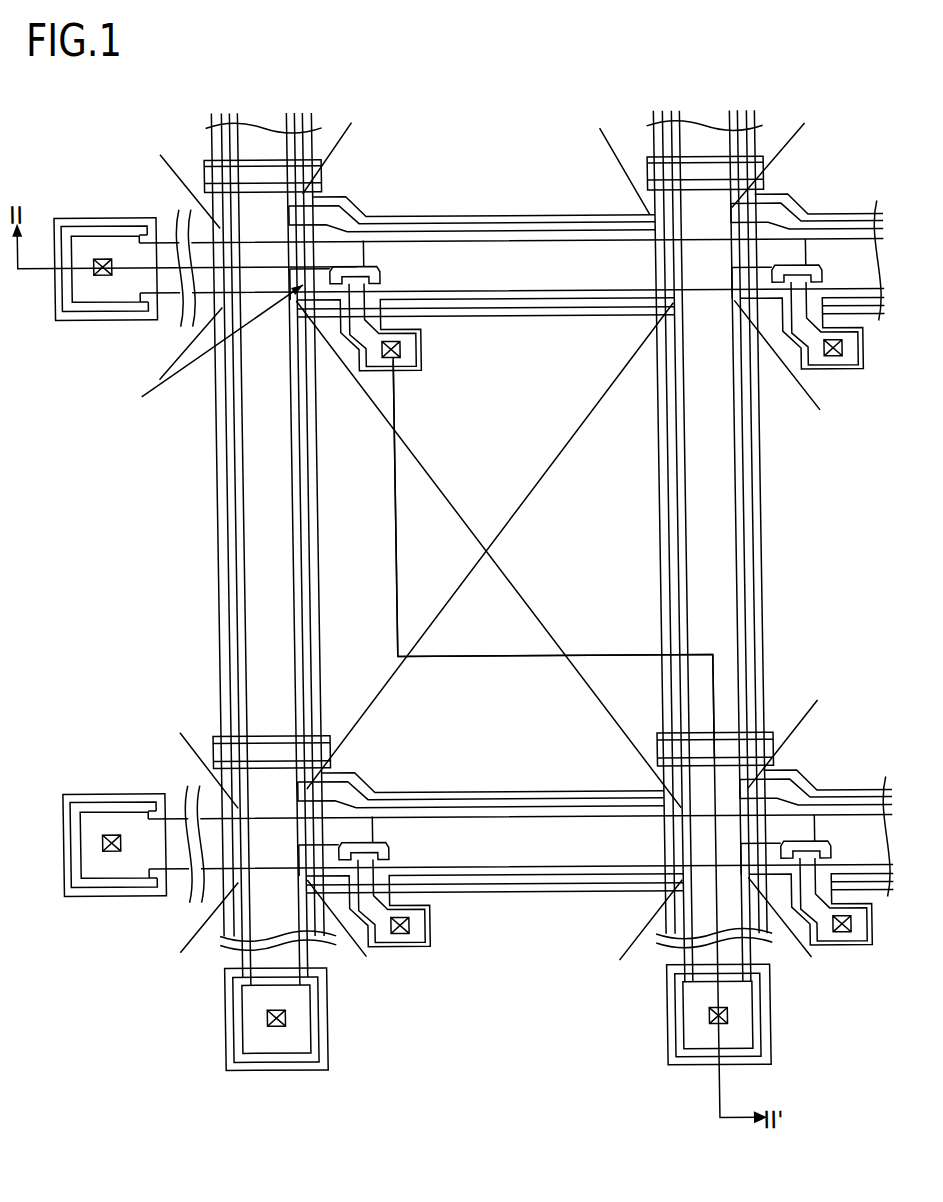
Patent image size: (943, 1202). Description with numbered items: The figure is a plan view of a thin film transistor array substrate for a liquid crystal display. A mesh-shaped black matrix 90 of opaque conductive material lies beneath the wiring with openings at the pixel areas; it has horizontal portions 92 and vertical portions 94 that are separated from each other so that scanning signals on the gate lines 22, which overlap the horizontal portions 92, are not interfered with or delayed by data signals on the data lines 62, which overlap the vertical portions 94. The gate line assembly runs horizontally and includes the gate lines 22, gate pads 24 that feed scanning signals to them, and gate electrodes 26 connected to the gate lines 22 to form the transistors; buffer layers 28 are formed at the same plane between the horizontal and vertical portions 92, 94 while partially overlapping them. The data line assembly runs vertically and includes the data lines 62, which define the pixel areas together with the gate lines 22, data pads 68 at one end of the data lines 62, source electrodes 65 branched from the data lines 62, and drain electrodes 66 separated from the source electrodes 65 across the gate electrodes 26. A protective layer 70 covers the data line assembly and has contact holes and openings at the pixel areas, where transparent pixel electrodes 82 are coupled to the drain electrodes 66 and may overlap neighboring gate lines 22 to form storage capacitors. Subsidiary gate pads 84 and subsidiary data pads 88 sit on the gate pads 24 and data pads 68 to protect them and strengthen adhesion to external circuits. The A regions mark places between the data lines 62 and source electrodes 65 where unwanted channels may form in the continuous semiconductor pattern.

The gate line 22 is at (530, 240).
The gate pad 24 is at (92, 233).
The gate electrode 26 is at (371, 266).
The buffer layer 28 is at (211, 368).
The data line 62 is at (249, 571).
The source electrode 65 is at (332, 221).
The drain electrode 66 is at (397, 372).
The data pad 68 is at (676, 1019).
The protective layer 70 is at (496, 297).
The pixel electrode 82 is at (556, 310).
The subsidiary gate pad 84 is at (118, 216).
The subsidiary data pad 88 is at (660, 1051).
The black matrix 90 is at (556, 716).
The horizontal portion 92 is at (569, 816).
The vertical portion 94 is at (658, 652).
The A region A is at (211, 350).